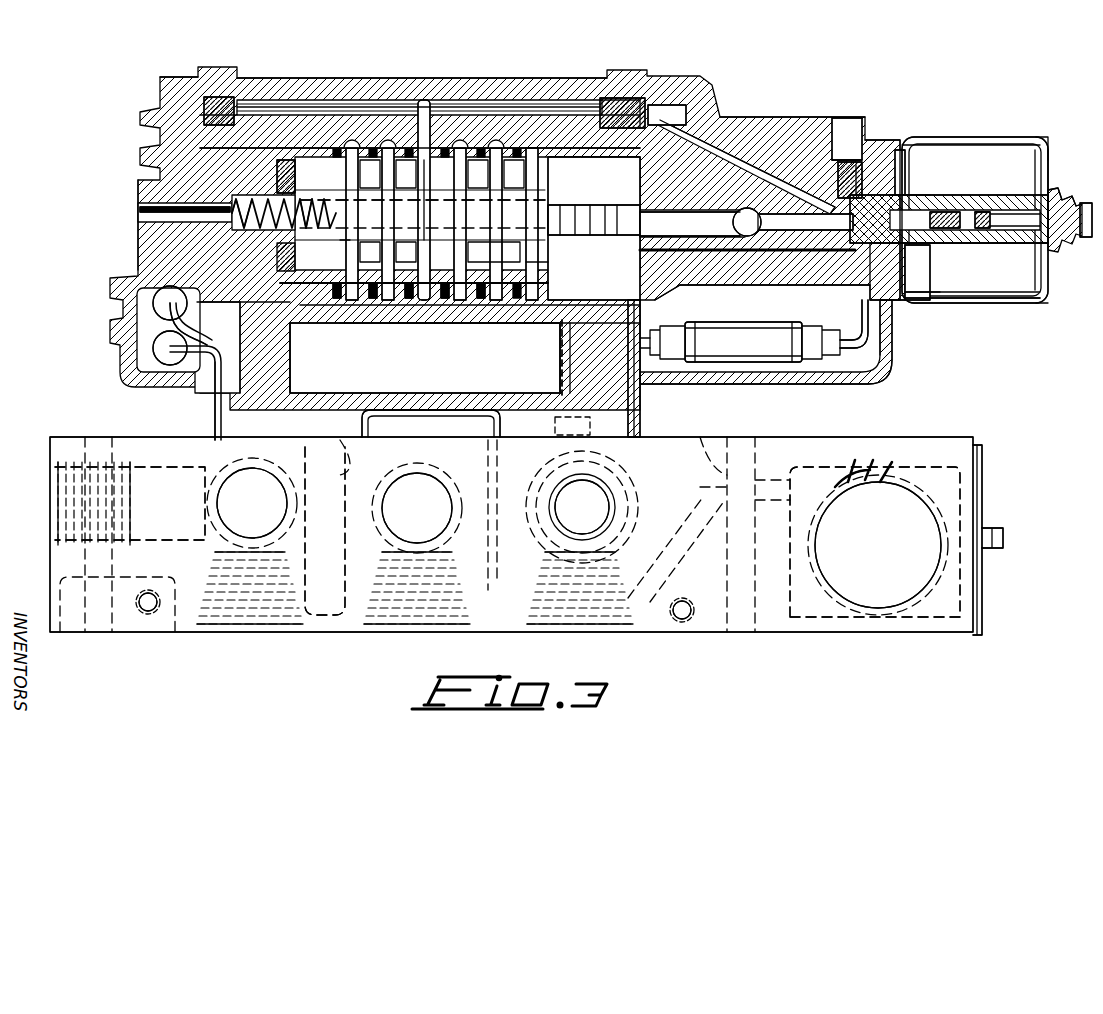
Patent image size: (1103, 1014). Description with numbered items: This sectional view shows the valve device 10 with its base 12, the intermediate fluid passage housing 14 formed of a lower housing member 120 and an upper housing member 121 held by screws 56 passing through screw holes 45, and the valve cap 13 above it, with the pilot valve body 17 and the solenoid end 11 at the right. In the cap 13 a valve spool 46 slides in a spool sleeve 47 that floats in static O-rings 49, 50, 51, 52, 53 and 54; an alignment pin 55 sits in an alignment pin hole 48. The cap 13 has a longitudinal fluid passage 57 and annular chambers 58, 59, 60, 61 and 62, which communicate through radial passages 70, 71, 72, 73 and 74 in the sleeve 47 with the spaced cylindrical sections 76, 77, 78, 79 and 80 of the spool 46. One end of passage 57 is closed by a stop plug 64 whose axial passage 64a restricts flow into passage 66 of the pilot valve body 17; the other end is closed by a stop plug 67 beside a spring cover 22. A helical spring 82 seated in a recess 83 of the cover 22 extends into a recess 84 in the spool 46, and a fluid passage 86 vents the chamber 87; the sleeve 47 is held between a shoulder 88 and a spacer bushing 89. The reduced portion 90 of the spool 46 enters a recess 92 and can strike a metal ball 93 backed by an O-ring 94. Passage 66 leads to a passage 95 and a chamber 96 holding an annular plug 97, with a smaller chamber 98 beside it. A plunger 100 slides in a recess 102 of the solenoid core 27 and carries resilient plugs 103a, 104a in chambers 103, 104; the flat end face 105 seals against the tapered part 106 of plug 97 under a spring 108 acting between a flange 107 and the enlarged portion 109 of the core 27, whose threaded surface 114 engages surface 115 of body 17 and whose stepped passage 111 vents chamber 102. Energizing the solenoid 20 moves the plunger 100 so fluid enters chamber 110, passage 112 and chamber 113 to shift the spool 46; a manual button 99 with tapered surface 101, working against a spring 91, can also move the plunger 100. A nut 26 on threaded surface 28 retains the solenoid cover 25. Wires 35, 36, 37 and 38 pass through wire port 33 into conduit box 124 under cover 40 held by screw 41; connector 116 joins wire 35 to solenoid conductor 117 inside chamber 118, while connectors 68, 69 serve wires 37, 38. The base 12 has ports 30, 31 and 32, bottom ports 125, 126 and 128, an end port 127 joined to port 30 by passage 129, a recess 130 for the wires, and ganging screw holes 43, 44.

The valve body 10 is at (152, 192).
The solenoid assembly 11 is at (1045, 128).
The base 12 is at (190, 633).
The valve cap 13 is at (512, 78).
The intermediate fluid passage housing 14 is at (482, 386).
The pilot valve body 17 is at (720, 130).
The solenoid 20 is at (986, 150).
The spring cover 22 is at (165, 100).
The solenoid cover 25 is at (1050, 163).
The nut 26 is at (1042, 298).
The solenoid core 27 is at (1090, 260).
The threaded surface 28 is at (1072, 200).
The port 30 is at (266, 521).
The port 31 is at (412, 536).
The port 32 is at (576, 531).
The wire port 33 is at (921, 601).
The wire 35 is at (640, 406).
The wire 36 is at (834, 525).
The wire 37 is at (213, 408).
The wire 38 is at (207, 336).
The cover 40 is at (985, 600).
The screw 41 is at (1005, 536).
The screw hole 43 is at (146, 608).
The screw hole 44 is at (685, 619).
The screw holes 45 is at (561, 361).
The valve spool 46 is at (594, 240).
The valve spool sleeve 47 is at (540, 150).
The alignment pin hole 48 is at (291, 340).
The O-ring 49 is at (293, 302).
The O-ring 50 is at (346, 304).
The O-ring 51 is at (393, 304).
The O-ring 52 is at (431, 304).
The O-ring 53 is at (471, 304).
The O-ring 54 is at (506, 304).
The alignment pin 55 is at (291, 361).
The screw 56 is at (571, 375).
The longitudinal fluid passage 57 is at (340, 102).
The annular fluid chamber 58 is at (352, 144).
The annular fluid chamber 59 is at (388, 144).
The annular fluid chamber 60 is at (424, 100).
The annular fluid chamber 61 is at (460, 144).
The annular fluid chamber 62 is at (496, 144).
The stop plug 64 is at (610, 106).
The axial passage 64a is at (642, 110).
The fluid passage 66 is at (668, 112).
The stop plug 67 is at (236, 92).
The quick disconnect electrical connector 68 is at (153, 303).
The quick disconnect electrical connector 69 is at (153, 356).
The radially extending fluid passage 70 is at (354, 170).
The radially extending fluid passage 71 is at (421, 160).
The radially extending fluid passage 72 is at (427, 166).
The radially extending fluid passage 73 is at (461, 165).
The radially extending fluid passage 74 is at (497, 165).
The cylindrical section 76 is at (338, 248).
The cylindrical section 77 is at (368, 255).
The cylindrical section 78 is at (440, 258).
The cylindrical section 79 is at (500, 257).
The cylindrical section 80 is at (545, 259).
The helical spring 82 is at (235, 214).
The recess 83 is at (272, 236).
The cylindrical recess 84 is at (406, 196).
The fluid passage 86 is at (183, 192).
The chamber 87 is at (278, 178).
The annular inwardly projecting shoulder 88 is at (305, 150).
The annular spacer bushing 89 is at (550, 164).
The reduced axially extending portion 90 is at (651, 214).
The spring 91 is at (838, 120).
The recess 92 is at (690, 212).
The metal ball 93 is at (745, 210).
The resilient O-ring 94 is at (791, 285).
The passage 95 is at (809, 175).
The cylindrical chamber 96 is at (851, 320).
The annular plug 97 is at (826, 290).
The smaller chamber 98 is at (812, 225).
The manual button 99 is at (860, 165).
The solenoid activated plunger 100 is at (941, 205).
The tapered surface 101 is at (848, 160).
The cylindrical recess 102 is at (959, 232).
The open ended cylindrical chamber 103 is at (986, 212).
The plug 103a is at (976, 212).
The open ended cylindrical chamber 104 is at (936, 245).
The plug 104a is at (931, 190).
The flat end face 105 is at (903, 250).
The tapered part 106 is at (886, 331).
The outwardly extending flange 107 is at (893, 306).
The spring 108 is at (906, 301).
The enlarged portion 109 is at (881, 150).
The chamber 110 is at (832, 165).
The stepped cylindrical passage 111 is at (1026, 229).
The passage 112 is at (749, 288).
The chamber 113 is at (668, 296).
The cylindrical threaded surface 114 is at (901, 160).
The surface 115 is at (936, 150).
The quick disconnect electrical connector 116 is at (759, 378).
The conductor 117 is at (991, 304).
The chamber 118 is at (729, 325).
The lower housing member 120 is at (641, 430).
The upper housing member 121 is at (500, 378).
The conduit box 124 is at (986, 478).
The threaded port 125 is at (396, 628).
The threaded port 126 is at (573, 628).
The threaded port 127 is at (60, 495).
The port 128 is at (231, 628).
The passage 129 is at (181, 545).
The irregularly shaped recess 130 is at (339, 628).